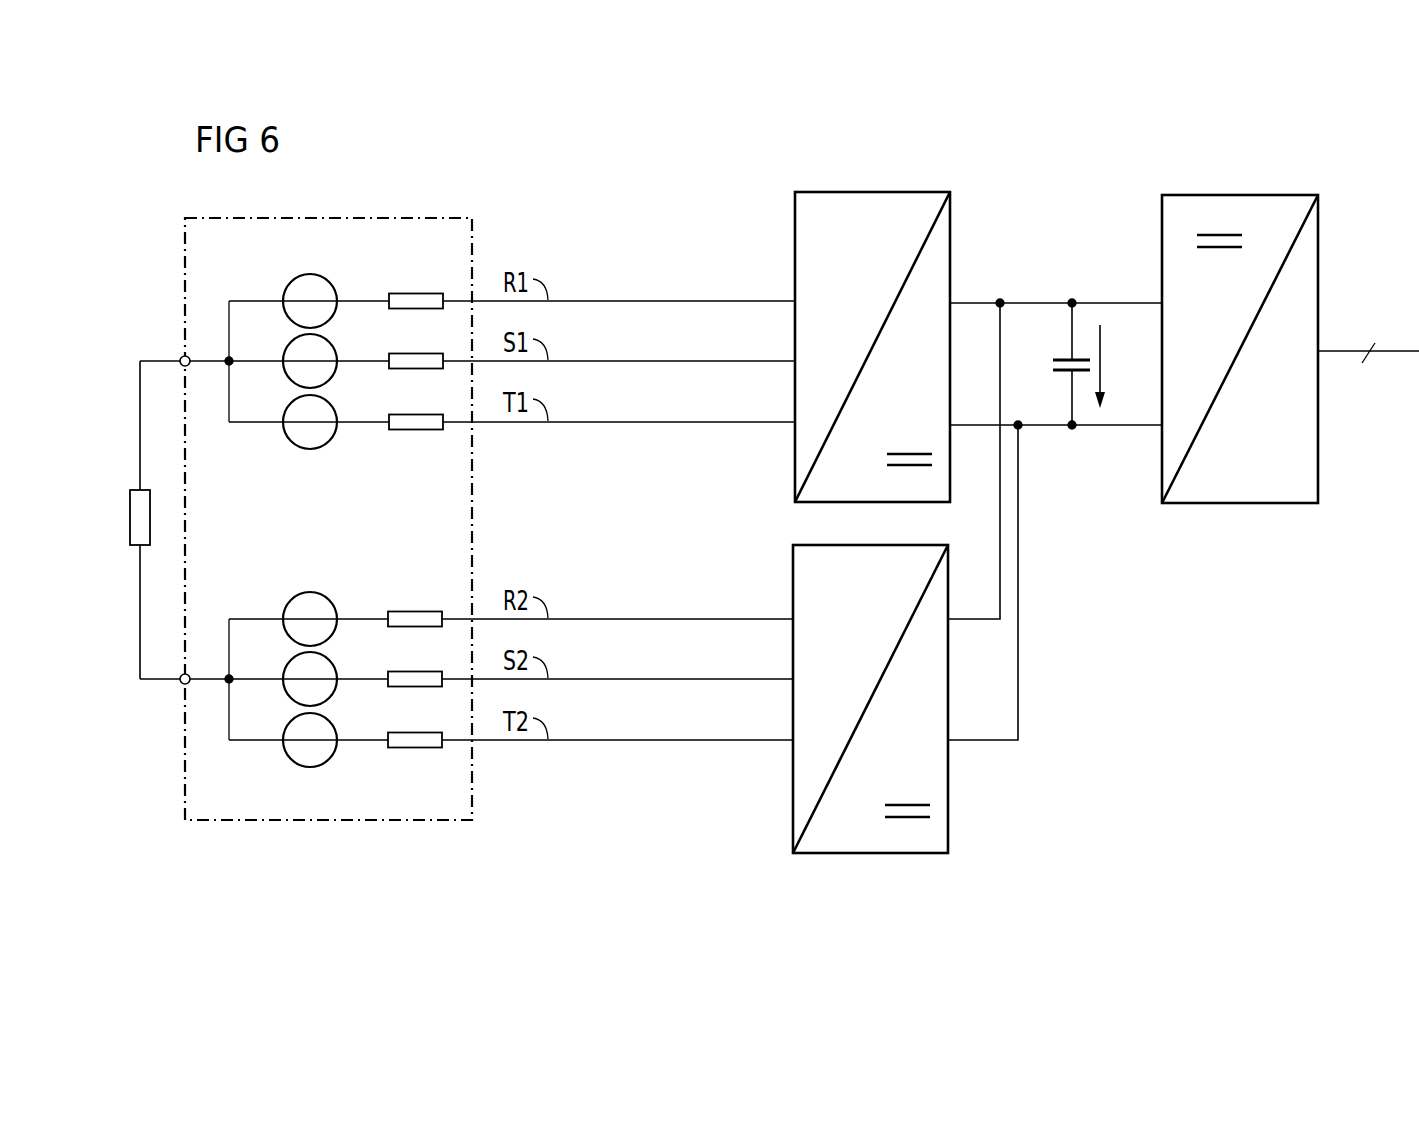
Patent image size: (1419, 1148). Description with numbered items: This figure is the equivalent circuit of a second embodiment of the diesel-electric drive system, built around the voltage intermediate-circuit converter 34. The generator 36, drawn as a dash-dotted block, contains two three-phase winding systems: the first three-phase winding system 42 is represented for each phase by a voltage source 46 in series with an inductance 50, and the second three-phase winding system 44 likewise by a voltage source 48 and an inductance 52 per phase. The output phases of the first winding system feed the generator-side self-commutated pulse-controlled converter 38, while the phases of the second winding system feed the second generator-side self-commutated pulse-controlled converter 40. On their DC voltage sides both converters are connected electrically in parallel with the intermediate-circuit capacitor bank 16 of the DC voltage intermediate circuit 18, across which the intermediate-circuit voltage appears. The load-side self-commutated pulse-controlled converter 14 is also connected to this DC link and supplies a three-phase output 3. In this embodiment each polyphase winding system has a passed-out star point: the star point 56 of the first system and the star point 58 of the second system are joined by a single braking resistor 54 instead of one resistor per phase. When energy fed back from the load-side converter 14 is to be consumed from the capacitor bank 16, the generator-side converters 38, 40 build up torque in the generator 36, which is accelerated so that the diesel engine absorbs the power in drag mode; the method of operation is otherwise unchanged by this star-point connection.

The three-phase AC output 3 is at (1368, 336).
The load-side self-commutated pulse-controlled converter 14 is at (1260, 194).
The intermediate-circuit capacitor bank 16 is at (1068, 356).
The DC voltage intermediate circuit 18 is at (1055, 491).
The voltage intermediate-circuit converter 34 is at (1098, 575).
The generator 36 is at (337, 821).
The self-commutated pulse-controlled converter 38 is at (897, 191).
The self-commutated pulse-controlled converter 40 is at (893, 854).
The first three-phase winding system 42 is at (334, 373).
The second three-phase winding system 44 is at (333, 686).
The voltage source 46 is at (291, 282).
The voltage source 48 is at (291, 600).
The inductance 50 is at (435, 291).
The inductance 52 is at (435, 609).
The braking resistor 54 is at (130, 518).
The star point 56 is at (182, 356).
The second primary terminal 58 is at (181, 684).